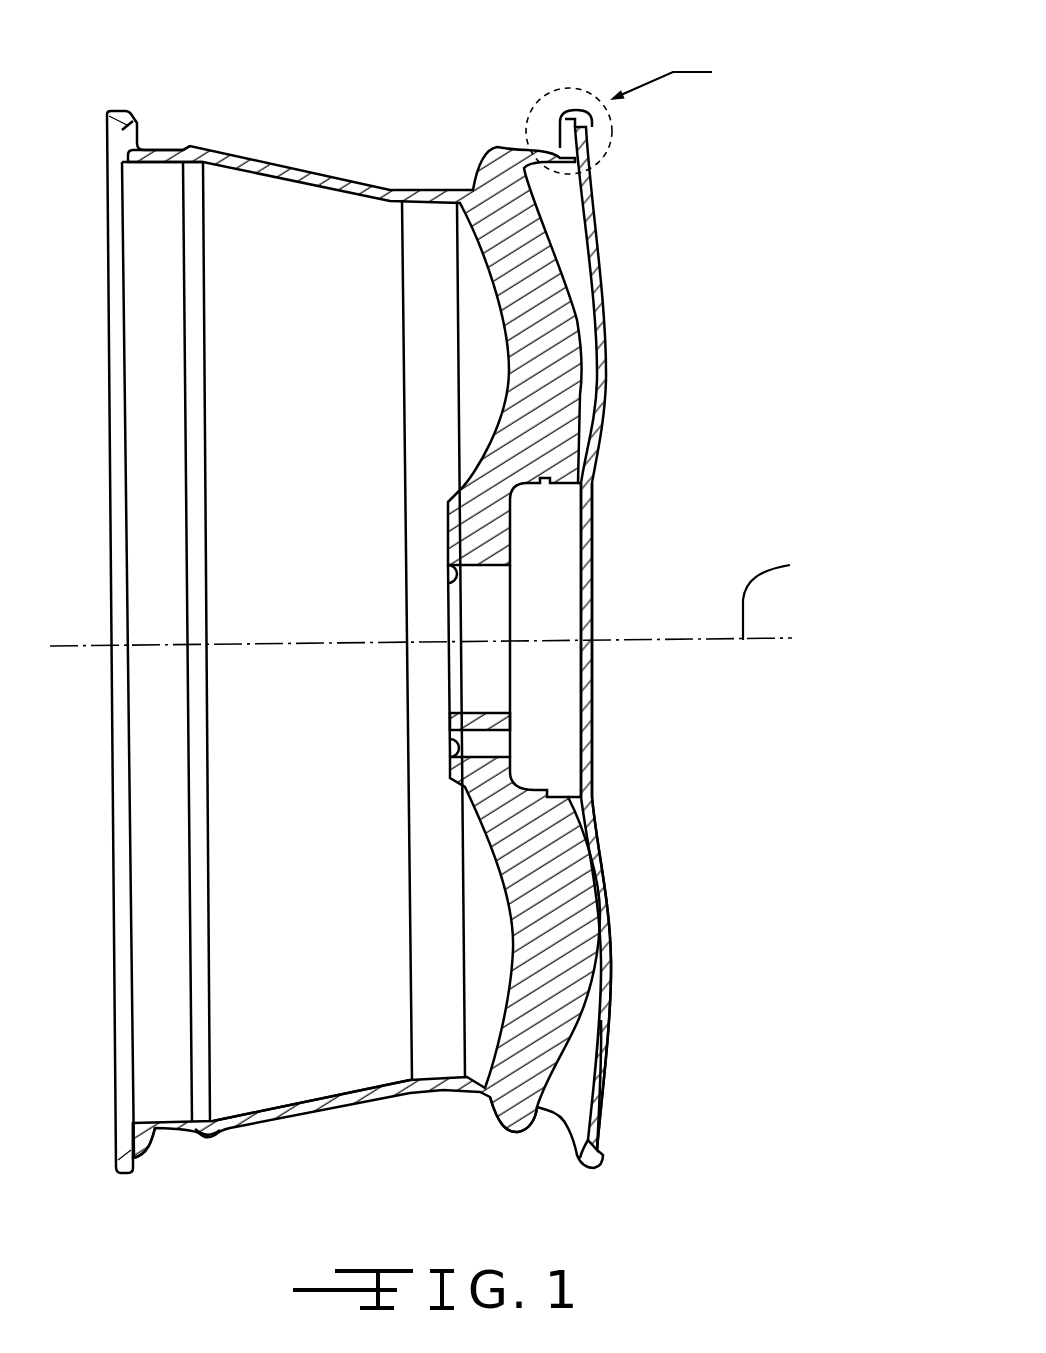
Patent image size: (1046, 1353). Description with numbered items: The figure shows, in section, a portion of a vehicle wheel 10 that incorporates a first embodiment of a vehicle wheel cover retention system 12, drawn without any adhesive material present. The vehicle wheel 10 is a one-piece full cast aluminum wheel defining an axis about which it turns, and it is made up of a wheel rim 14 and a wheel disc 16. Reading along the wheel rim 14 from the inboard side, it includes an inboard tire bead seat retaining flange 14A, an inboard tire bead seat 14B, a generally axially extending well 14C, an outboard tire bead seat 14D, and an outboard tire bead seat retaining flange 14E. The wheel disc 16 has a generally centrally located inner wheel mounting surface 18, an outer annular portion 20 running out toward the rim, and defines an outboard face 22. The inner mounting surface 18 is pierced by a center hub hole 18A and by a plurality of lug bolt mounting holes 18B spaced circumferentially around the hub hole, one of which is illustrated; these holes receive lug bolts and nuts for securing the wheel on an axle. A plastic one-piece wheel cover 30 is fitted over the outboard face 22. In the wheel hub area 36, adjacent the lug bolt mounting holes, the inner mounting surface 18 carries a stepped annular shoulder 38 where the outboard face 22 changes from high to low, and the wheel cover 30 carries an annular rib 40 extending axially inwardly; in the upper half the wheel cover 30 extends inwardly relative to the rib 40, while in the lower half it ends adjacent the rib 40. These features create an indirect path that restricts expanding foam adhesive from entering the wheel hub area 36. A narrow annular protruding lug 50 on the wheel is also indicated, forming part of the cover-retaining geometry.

The vehicle wheel 10 is at (461, 614).
The vehicle wheel cover retention system 12 is at (543, 575).
The wheel rim 14 is at (355, 669).
The inboard tire bead seat retaining flange 14A is at (150, 1155).
The inboard tire bead seat 14B is at (175, 1133).
The well 14C is at (337, 1107).
The outboard tire bead seat 14D is at (533, 1130).
The outboard tire bead seat retaining flange 14E is at (570, 1153).
The wheel disc 16 is at (508, 962).
The inner wheel mounting surface 18 is at (389, 625).
The center hub hole 18A is at (448, 584).
The lug bolt mounting hole 18B is at (460, 746).
The outer annular portion 20 is at (490, 277).
The outboard face 22 is at (603, 993).
The wheel cover 30 is at (610, 1047).
The wheel hub area 36 is at (537, 765).
The shoulder 38 is at (558, 470).
The rib 40 is at (563, 790).
The annular protruding lug 50 is at (570, 108).